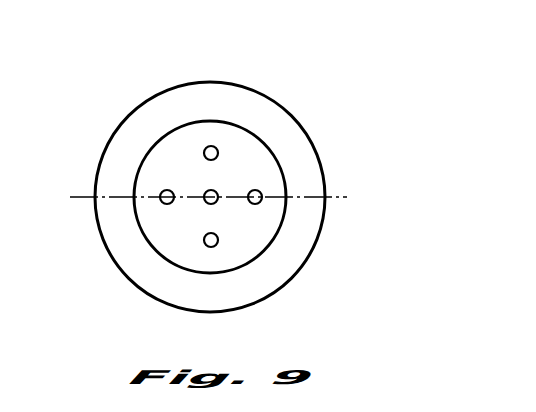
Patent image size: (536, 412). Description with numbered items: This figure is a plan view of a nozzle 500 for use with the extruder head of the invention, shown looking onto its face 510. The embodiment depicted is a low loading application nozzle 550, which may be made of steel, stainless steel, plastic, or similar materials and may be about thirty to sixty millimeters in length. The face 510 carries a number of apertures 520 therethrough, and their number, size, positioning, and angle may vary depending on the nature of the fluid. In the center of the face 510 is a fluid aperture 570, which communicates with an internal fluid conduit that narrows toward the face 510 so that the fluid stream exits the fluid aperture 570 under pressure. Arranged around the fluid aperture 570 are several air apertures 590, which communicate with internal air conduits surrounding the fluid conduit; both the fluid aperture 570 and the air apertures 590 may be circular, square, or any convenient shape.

The nozzle 500 is at (142, 104).
The face 510 is at (295, 143).
The low loading application nozzle 550 is at (203, 82).
The fluid aperture 570 is at (216, 192).
The air apertures 590 is at (249, 201).
The apertures 520 is at (220, 242).